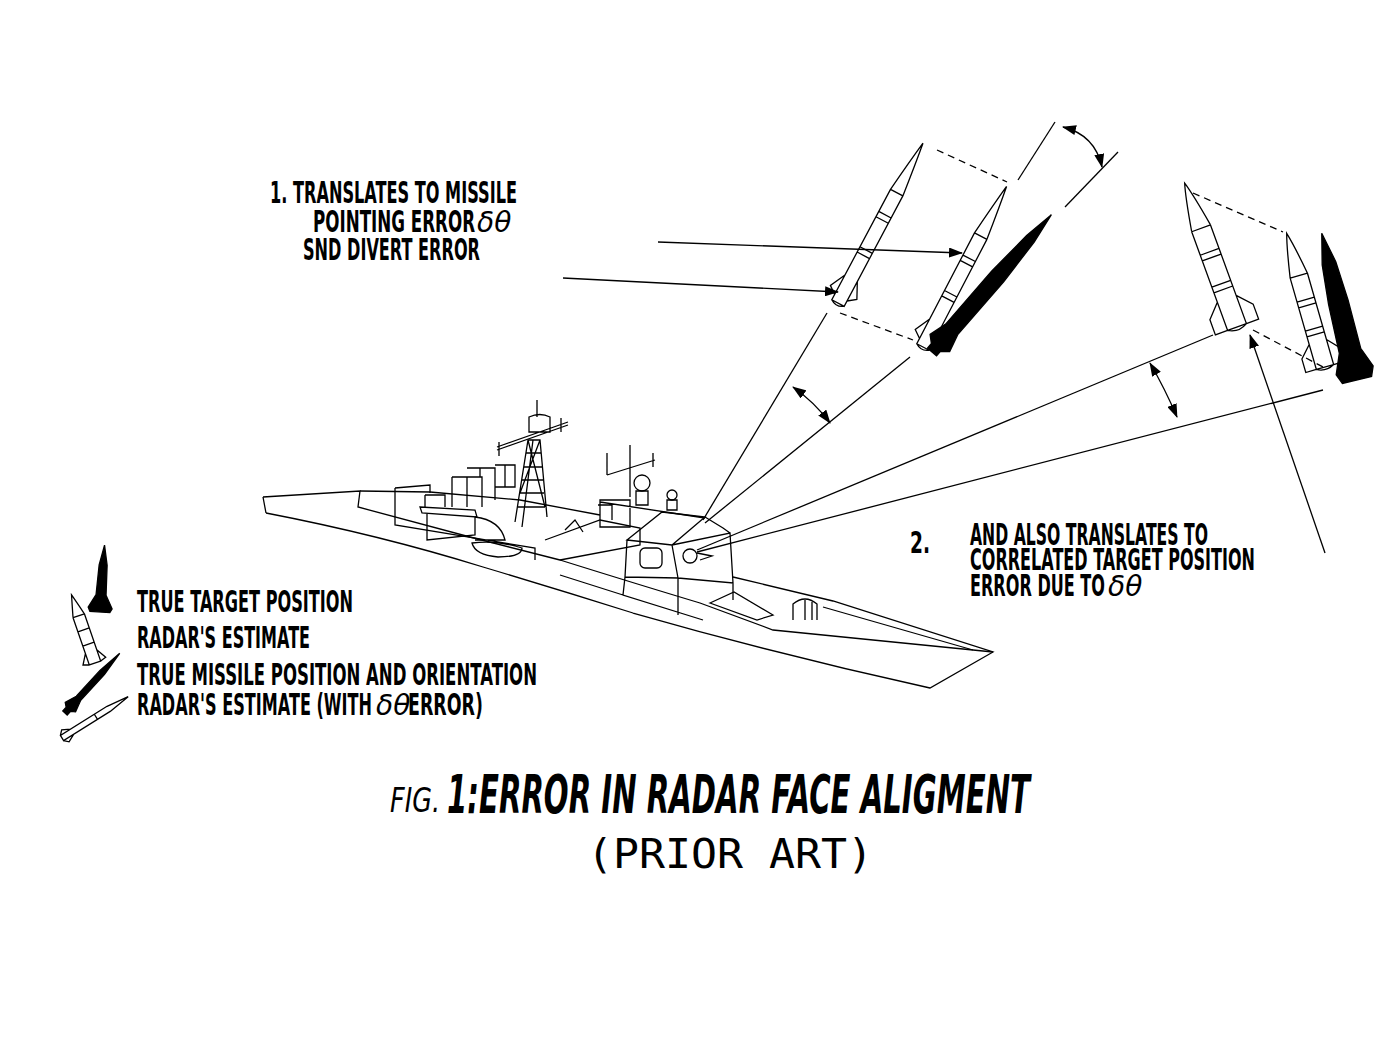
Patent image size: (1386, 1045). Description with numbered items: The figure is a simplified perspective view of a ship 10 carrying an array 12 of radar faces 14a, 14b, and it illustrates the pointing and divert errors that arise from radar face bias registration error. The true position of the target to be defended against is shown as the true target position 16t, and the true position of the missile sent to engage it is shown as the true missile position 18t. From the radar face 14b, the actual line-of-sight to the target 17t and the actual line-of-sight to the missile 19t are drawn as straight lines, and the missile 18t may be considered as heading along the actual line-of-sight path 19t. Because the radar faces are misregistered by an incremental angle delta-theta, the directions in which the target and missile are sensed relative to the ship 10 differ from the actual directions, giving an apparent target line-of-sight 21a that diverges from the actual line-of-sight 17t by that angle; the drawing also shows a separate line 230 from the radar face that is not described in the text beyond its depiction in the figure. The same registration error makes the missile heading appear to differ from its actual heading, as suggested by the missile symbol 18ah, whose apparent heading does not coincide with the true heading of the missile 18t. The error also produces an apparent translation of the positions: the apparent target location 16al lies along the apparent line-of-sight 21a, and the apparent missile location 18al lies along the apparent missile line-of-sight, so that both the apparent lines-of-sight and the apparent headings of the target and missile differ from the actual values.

The ship 10 is at (677, 637).
The array of radar faces 12 is at (552, 618).
The radar face 14a is at (647, 577).
The radar face 14b is at (692, 565).
The apparent target location 16al is at (1307, 257).
The true position of target 16t is at (1337, 280).
The actual line-of-sight to target 17t is at (1150, 440).
The apparent missile location 18al is at (890, 193).
The missile symbol with apparent heading 18ah is at (967, 230).
The true position of missile 18t is at (1013, 267).
The actual line-of-sight to missile 19t is at (863, 400).
The apparent target line-of-sight 21a is at (1057, 400).
The radar boresight / estimated missile pointing line 230 is at (790, 378).